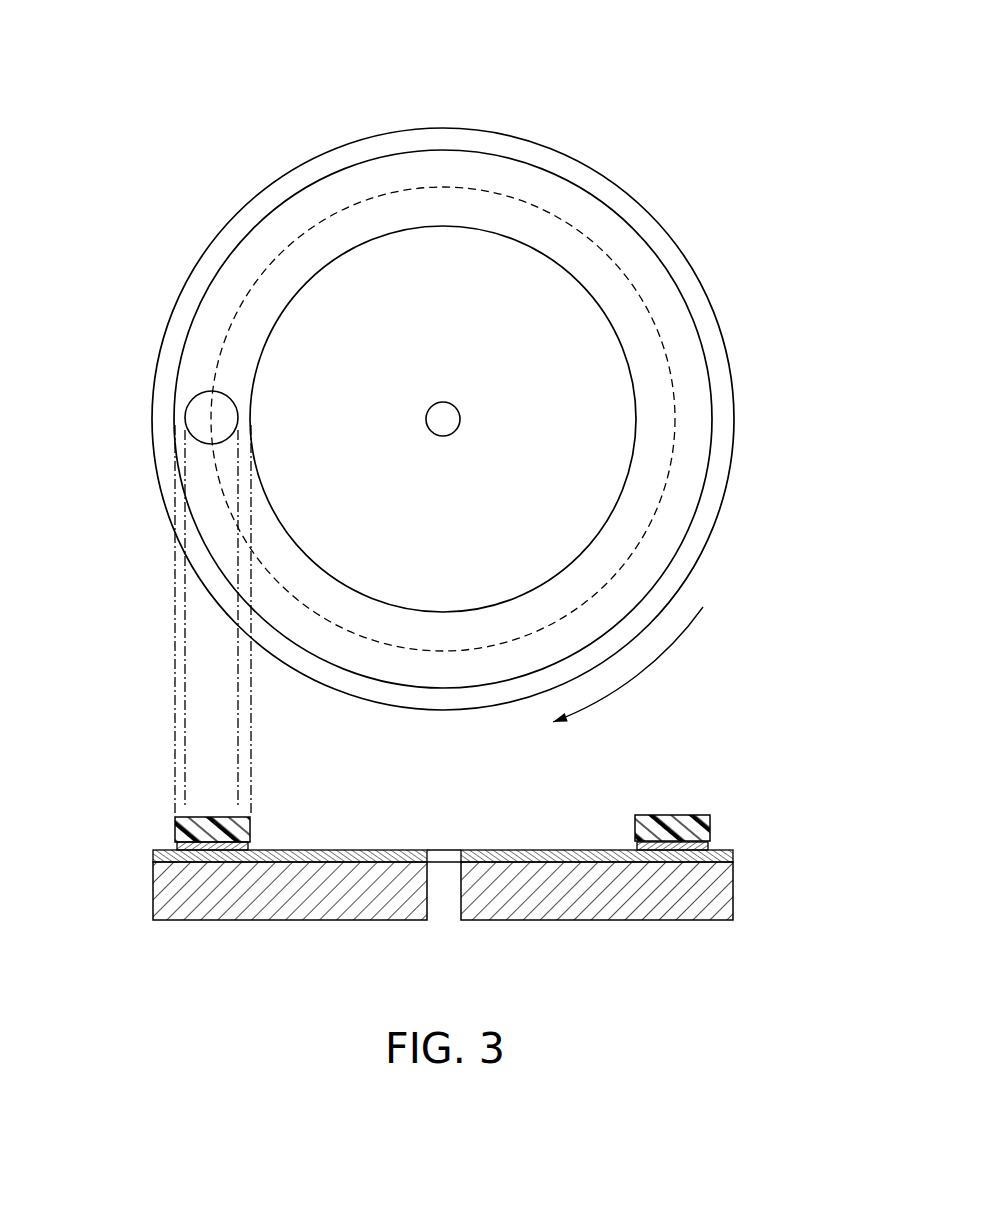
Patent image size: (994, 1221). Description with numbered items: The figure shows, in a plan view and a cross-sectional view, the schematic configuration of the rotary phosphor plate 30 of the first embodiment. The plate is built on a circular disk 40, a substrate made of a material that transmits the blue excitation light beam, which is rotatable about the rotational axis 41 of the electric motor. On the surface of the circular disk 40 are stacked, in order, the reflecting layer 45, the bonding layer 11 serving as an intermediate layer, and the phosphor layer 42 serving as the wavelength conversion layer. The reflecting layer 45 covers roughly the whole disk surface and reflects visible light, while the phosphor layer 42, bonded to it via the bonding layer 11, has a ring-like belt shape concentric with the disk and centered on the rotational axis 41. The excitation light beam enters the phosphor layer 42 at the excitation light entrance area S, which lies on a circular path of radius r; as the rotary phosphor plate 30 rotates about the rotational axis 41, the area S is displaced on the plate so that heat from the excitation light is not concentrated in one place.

The rotary phosphor plate 30 is at (682, 158).
The circular disk 40 is at (722, 329).
The rotational axis 41 is at (441, 416).
The phosphor layer 42 is at (653, 278).
The reflecting layer 45 is at (513, 148).
The bonding layer 11 is at (177, 847).
The excitation light entrance area S is at (211, 391).
The radius of processing path r is at (668, 460).